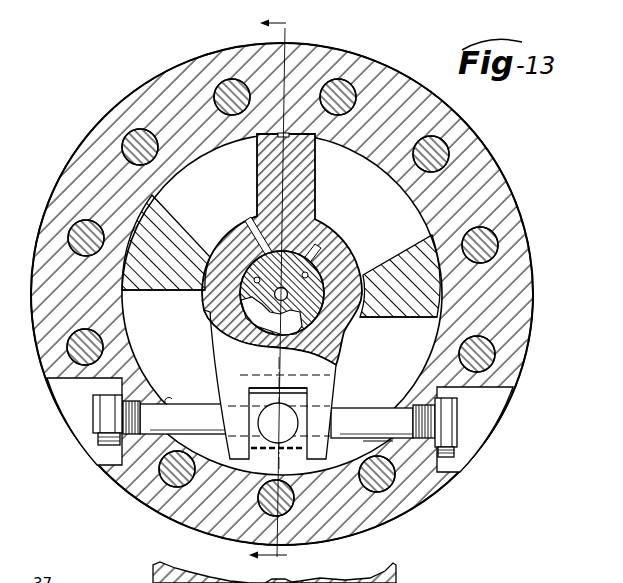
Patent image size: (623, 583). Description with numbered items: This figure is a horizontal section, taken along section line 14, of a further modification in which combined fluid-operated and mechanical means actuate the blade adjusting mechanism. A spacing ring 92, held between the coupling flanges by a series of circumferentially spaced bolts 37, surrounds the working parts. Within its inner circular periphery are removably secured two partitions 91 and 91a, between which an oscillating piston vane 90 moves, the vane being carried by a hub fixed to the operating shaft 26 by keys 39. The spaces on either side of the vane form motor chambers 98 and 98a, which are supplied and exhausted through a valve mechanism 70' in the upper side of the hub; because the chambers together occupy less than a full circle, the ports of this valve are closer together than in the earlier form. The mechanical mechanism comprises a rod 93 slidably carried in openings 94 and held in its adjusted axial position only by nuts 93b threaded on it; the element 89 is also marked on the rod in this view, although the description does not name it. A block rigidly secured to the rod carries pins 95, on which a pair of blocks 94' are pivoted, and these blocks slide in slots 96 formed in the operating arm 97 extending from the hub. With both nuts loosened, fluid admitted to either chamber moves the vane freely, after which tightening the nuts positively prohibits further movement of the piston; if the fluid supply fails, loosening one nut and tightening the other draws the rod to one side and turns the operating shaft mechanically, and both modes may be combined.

The section line 14 is at (274, 293).
The operating shaft 26 is at (217, 322).
The bolts 37 is at (486, 240).
The keys 39 is at (230, 339).
The valve mechanism 70' is at (309, 283).
The bolt 89 is at (214, 413).
The oscillating piston vane 90 is at (309, 162).
The partition 91 is at (407, 312).
The partition 91a is at (178, 283).
The spacing ring 92 is at (218, 147).
The rod 93 is at (372, 407).
The nuts 93b is at (112, 437).
The openings 94 is at (279, 406).
The blocks 94' is at (278, 463).
The pins 95 is at (291, 418).
The slots 96 is at (249, 388).
The operating arm 97 is at (226, 360).
The motor chamber 98 is at (177, 237).
The motor chamber 98a is at (400, 261).